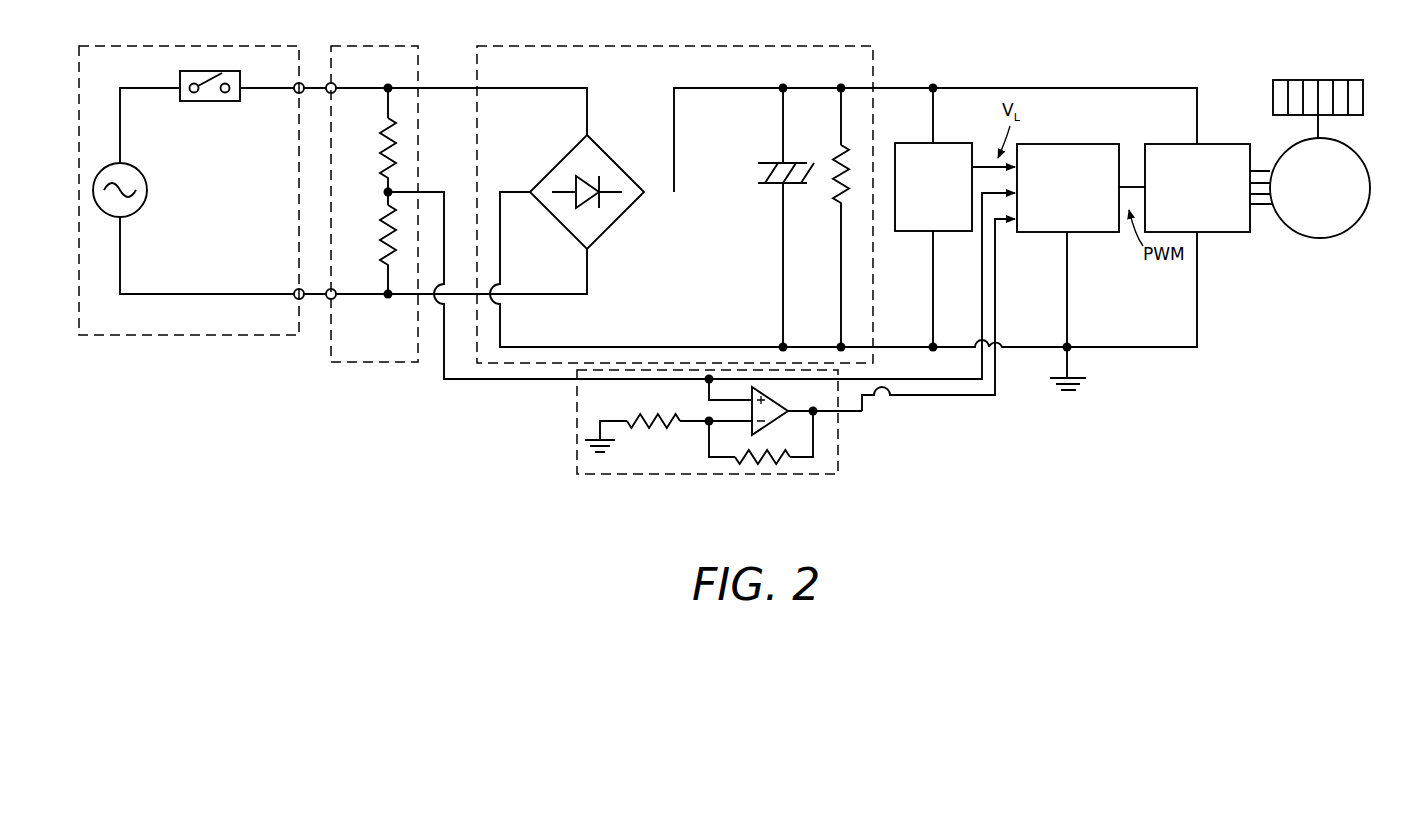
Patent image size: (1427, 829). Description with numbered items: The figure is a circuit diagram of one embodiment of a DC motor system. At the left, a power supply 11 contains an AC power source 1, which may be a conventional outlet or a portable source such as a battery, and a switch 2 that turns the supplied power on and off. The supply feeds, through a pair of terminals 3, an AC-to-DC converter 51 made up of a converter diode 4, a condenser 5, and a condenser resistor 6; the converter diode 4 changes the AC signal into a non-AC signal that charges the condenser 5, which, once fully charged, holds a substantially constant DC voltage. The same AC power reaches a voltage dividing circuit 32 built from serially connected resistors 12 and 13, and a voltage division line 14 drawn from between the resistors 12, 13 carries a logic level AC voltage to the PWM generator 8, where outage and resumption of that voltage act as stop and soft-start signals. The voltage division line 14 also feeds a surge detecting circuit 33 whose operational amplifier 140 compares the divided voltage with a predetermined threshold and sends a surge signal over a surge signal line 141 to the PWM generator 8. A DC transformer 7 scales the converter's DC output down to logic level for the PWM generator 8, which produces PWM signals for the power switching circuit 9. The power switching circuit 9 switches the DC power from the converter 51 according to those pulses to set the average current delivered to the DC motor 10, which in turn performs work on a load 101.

The AC power source 1 is at (138, 172).
The switch 2 is at (188, 72).
The terminals / connector 3 is at (322, 298).
The converter diode 4 is at (615, 160).
The condenser 5 is at (758, 176).
The condenser resistor 6 is at (836, 188).
The DC transformer 7 is at (939, 143).
The PWM generator 8 is at (1077, 144).
The power switching circuit 9 is at (1216, 144).
The DC motor 10 is at (1364, 166).
The load 101 is at (1345, 80).
The power supply 11 is at (116, 44).
The resistor 12 is at (382, 164).
The resistor 13 is at (382, 250).
The voltage division line 14 is at (466, 382).
The voltage dividing circuit 32 is at (368, 44).
The surge detecting circuit 33 is at (612, 478).
The AC-to-DC converter 51 is at (515, 44).
The operational amplifier 140 is at (750, 432).
The surge signal line 141 is at (978, 398).